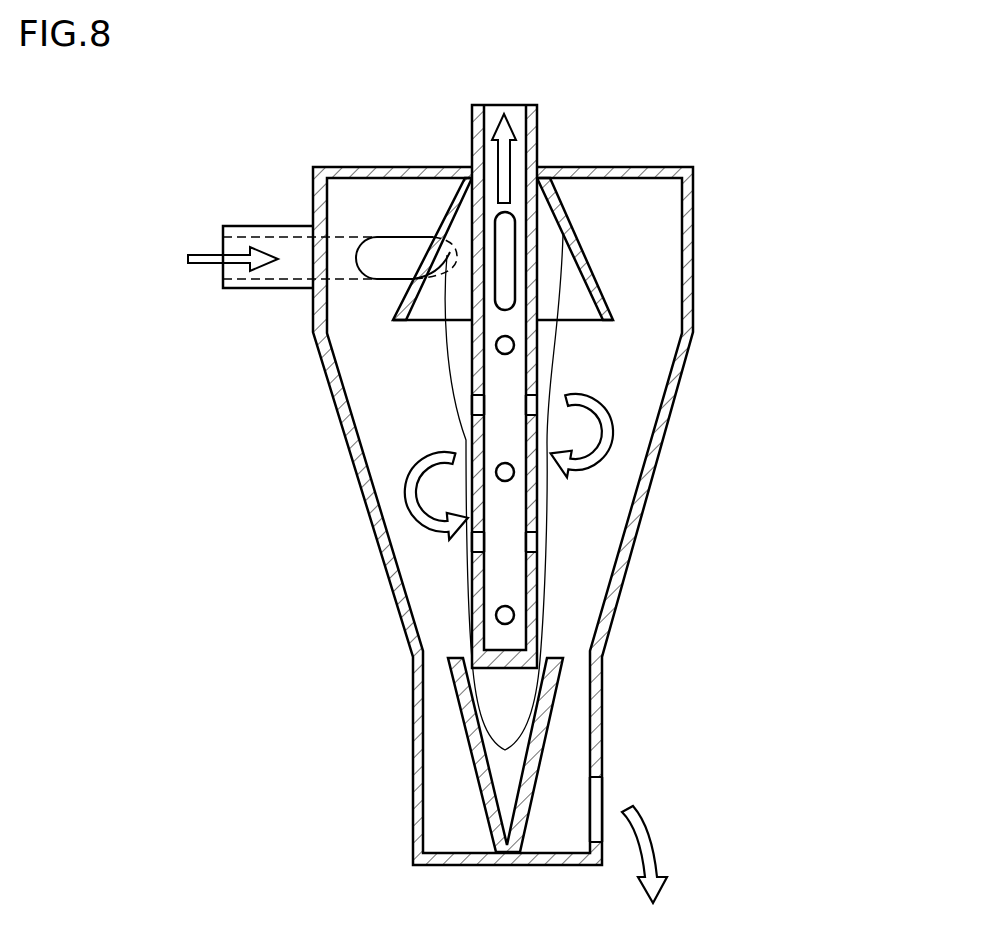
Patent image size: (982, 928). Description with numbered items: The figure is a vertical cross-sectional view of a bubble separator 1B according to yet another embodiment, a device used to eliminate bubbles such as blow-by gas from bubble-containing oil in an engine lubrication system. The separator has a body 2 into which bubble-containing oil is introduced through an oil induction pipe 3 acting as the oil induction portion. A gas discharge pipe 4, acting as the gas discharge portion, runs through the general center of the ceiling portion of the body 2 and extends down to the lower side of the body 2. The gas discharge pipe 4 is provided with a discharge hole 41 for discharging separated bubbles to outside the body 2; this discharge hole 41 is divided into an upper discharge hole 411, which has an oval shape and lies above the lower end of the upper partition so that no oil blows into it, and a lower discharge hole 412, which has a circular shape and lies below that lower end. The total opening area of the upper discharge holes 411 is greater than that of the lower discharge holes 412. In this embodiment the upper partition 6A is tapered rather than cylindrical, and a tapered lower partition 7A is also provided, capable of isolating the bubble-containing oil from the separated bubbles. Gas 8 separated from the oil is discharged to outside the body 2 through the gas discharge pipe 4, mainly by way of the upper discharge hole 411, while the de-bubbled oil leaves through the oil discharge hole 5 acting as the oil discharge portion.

The bubble separator 1B is at (715, 186).
The body 2 is at (695, 312).
The oil induction pipe 3 is at (243, 226).
The gas discharge pipe 4 is at (686, 379).
The discharge hole 41 is at (686, 418).
The upper discharge hole 411 is at (514, 339).
The lower discharge hole 412 is at (536, 326).
The oil discharge hole 5 is at (606, 781).
The upper partition 6A is at (562, 237).
The lower partition 7A is at (540, 730).
The gas 8 is at (466, 440).